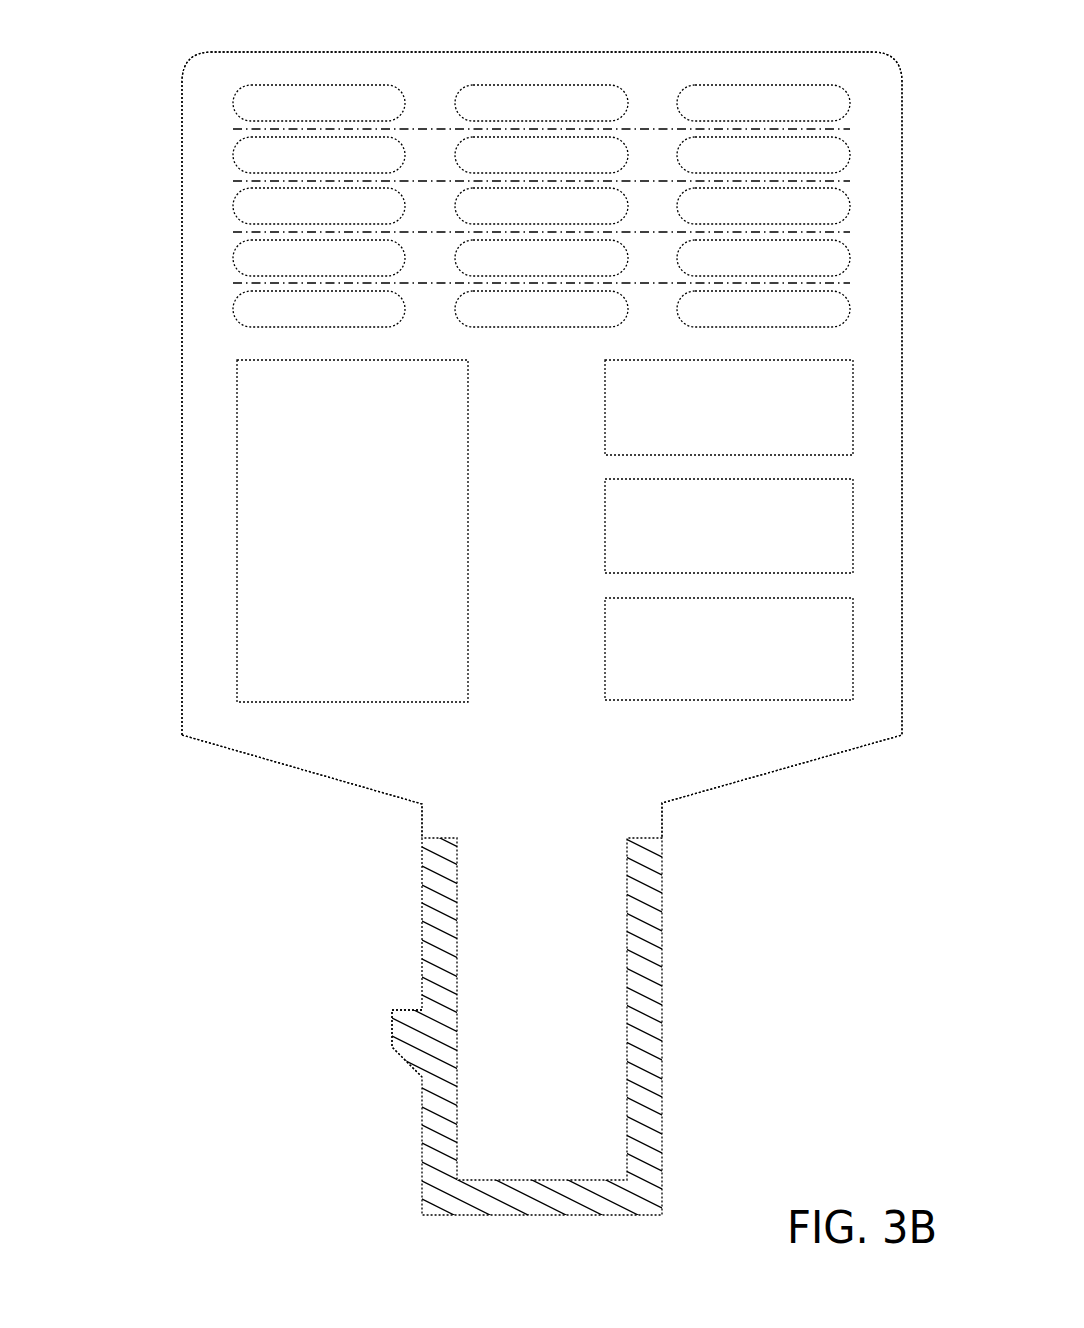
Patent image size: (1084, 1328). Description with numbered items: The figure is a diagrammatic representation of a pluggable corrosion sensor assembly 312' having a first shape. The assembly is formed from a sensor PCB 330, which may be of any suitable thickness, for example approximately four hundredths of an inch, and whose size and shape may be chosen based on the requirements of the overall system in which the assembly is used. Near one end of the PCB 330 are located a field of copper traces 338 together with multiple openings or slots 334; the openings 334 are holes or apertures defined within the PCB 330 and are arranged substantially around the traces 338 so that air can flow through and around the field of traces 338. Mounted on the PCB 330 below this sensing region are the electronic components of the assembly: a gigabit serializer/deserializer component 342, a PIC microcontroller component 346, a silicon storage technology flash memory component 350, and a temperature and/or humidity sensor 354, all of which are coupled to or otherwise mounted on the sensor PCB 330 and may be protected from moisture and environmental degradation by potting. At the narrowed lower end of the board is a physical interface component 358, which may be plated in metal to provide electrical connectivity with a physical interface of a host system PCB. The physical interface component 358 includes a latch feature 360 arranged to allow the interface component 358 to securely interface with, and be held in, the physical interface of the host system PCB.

The pluggable corrosion sensor assembly 312' is at (472, 424).
The sensor PCB 330 is at (723, 52).
The openings 334 is at (240, 88).
The traces 338 is at (237, 181).
The gigabit serializer/deserializer (SerDes) component 342 is at (237, 420).
The PIC microcontroller component 346 is at (853, 393).
The silicon storage technology (SST) flash memory component 350 is at (853, 655).
The temperature and/or humidity sensor 354 is at (853, 530).
The physical interface component 358 is at (657, 870).
The latch feature 360 is at (392, 1020).